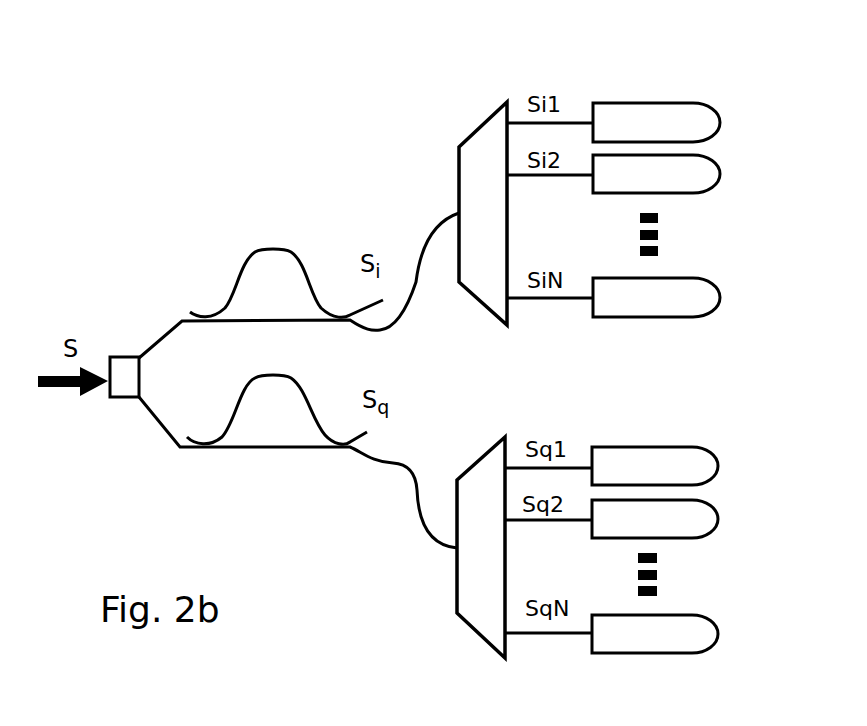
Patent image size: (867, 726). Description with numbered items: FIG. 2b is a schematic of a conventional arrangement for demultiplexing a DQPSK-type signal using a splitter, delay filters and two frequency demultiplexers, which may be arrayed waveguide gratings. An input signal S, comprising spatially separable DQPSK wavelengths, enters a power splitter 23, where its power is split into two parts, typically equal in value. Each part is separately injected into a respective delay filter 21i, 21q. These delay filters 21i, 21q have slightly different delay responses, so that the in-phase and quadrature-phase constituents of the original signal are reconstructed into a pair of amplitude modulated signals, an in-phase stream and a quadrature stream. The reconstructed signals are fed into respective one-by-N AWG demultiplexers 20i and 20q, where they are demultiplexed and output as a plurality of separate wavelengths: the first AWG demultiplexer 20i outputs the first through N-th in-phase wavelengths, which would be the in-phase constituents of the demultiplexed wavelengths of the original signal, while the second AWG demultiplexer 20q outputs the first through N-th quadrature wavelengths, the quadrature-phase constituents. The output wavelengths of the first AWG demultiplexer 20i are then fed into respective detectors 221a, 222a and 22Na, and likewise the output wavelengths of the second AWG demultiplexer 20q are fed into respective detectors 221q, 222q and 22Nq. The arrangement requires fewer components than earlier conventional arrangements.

The power splitter 23 is at (118, 355).
The delay filter 21i is at (233, 252).
The delay filter 21q is at (225, 468).
The AWG demultiplexer 20i is at (478, 120).
The AWG demultiplexer 20q is at (465, 623).
The detector 221a is at (720, 103).
The detector 222a is at (730, 167).
The detector 22Na is at (730, 290).
The detector 221q is at (728, 448).
The detector 222q is at (730, 510).
The detector 22Nq is at (722, 617).